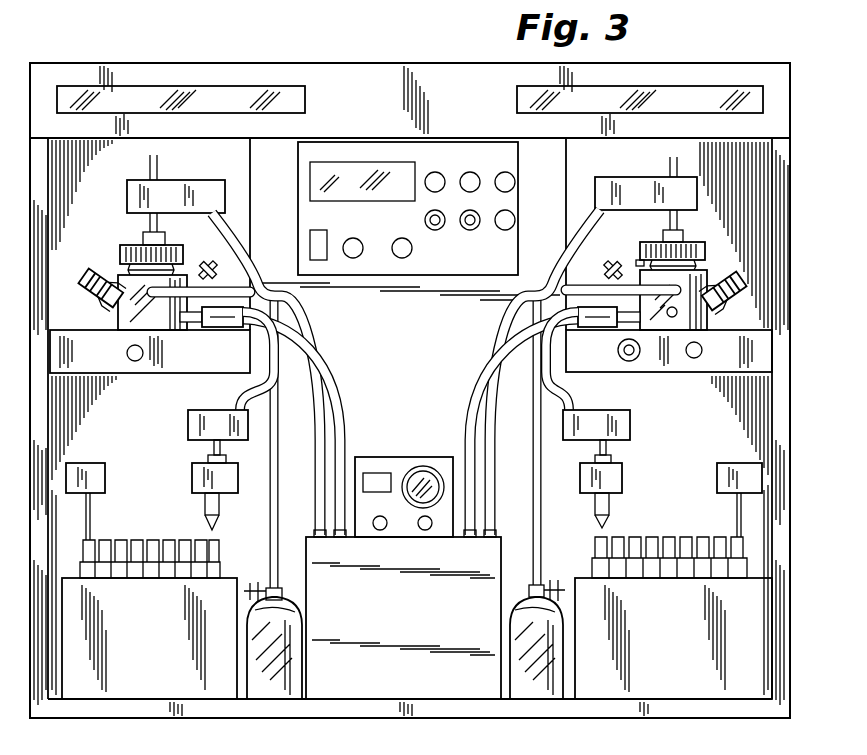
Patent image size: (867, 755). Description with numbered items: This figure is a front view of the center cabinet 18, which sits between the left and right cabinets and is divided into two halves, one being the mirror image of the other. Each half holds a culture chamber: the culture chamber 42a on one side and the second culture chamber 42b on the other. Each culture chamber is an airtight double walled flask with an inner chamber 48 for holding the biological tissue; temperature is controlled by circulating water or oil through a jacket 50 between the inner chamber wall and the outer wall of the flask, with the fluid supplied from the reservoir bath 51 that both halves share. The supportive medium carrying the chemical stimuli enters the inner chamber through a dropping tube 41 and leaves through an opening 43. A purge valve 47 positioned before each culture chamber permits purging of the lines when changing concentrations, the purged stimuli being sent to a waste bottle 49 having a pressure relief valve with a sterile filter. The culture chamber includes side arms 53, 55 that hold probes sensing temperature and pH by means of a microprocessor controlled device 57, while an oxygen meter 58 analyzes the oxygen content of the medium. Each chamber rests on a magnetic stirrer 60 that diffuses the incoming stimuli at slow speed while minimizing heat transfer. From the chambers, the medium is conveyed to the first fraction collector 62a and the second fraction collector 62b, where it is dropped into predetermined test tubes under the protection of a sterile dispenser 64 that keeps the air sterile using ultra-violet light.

The center cabinet 18 is at (380, 70).
The dropping tube 41 is at (698, 262).
The culture chamber 42a is at (706, 321).
The second culture chamber 42b is at (150, 305).
The opening 43 is at (220, 312).
The purge valve 47 is at (190, 200).
The inner chamber 48 is at (652, 312).
The waste bottle 49 is at (303, 628).
The jacket 50 is at (697, 335).
The reservoir bath 51 is at (414, 614).
The side arm 53 is at (606, 262).
The side arm 55 is at (90, 280).
The microprocessor controlled device 57 is at (184, 98).
The oxygen meter 58 is at (452, 270).
The magnetic stirrer 60 is at (775, 348).
The first fraction collector 62a is at (216, 588).
The second fraction collector 62b is at (94, 586).
The sterile dispenser 64 is at (203, 416).